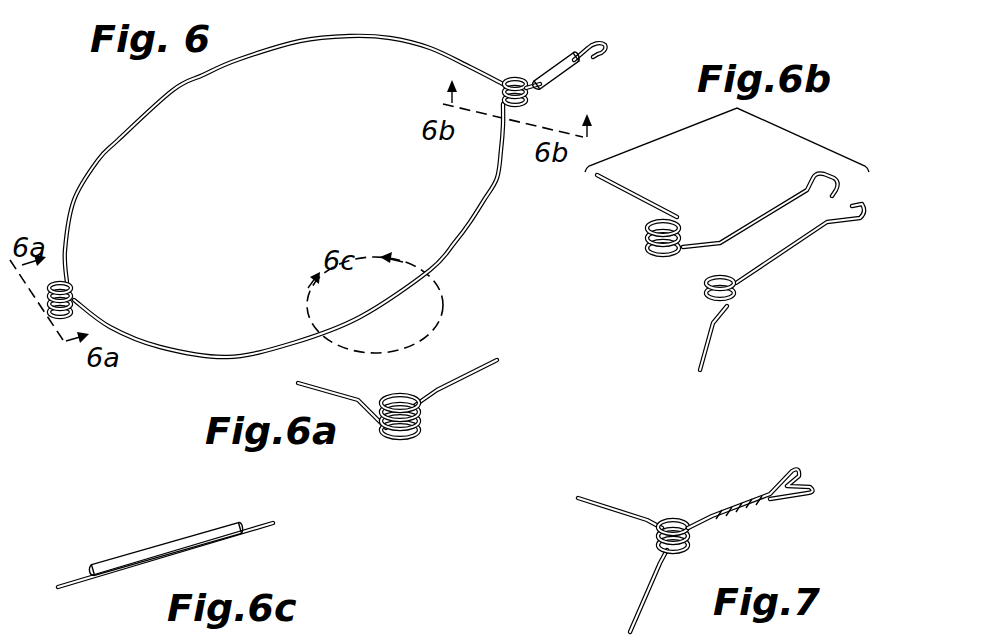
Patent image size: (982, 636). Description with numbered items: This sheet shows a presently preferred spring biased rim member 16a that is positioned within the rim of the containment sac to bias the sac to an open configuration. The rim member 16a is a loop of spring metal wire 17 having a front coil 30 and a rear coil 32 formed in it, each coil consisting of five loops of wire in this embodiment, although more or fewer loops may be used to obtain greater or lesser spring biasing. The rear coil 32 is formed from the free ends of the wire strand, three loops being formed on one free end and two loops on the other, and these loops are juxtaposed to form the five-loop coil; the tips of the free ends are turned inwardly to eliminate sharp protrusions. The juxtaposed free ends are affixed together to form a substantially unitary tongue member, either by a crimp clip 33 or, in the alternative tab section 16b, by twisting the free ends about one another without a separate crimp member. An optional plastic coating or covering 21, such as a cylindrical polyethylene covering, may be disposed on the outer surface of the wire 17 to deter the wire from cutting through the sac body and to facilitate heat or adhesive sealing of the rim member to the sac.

In FIG. 6, the rim member 16a is at (130, 117).
In FIG. 7, the wire segment 16b is at (620, 511).
In FIG. 6A, the wire 17 is at (481, 372).
In FIG. 6B, the wire 17 is at (747, 223).
In FIG. 6C, the wire 17 is at (273, 527).
In FIG. 7, the wire 17 is at (781, 474).
In FIG. 6C, the plastic coating or covering 21 is at (160, 551).
In FIG. 6, the front coil 30 is at (72, 288).
In FIG. 6A, the front coil 30 is at (414, 434).
In FIG. 6, the rear coil 32 is at (512, 80).
In FIG. 6B, the rear coil 32 is at (704, 293).
In FIG. 7, the rear coil 32 is at (658, 537).
In FIG. 6, the crimp clip 33 is at (577, 76).